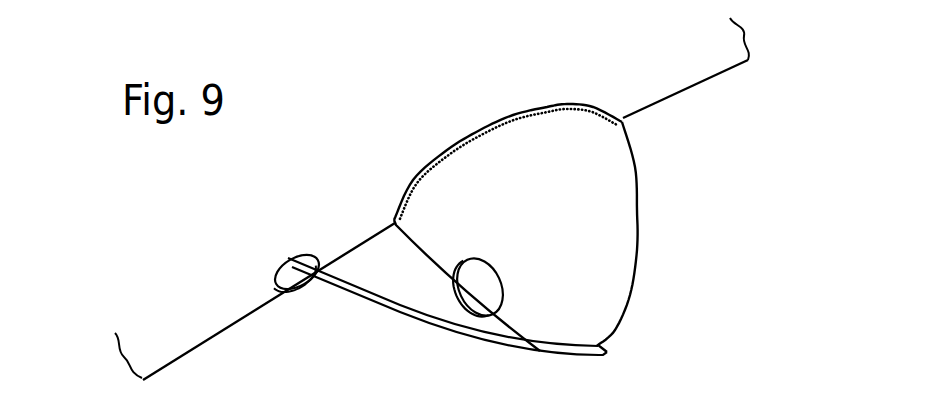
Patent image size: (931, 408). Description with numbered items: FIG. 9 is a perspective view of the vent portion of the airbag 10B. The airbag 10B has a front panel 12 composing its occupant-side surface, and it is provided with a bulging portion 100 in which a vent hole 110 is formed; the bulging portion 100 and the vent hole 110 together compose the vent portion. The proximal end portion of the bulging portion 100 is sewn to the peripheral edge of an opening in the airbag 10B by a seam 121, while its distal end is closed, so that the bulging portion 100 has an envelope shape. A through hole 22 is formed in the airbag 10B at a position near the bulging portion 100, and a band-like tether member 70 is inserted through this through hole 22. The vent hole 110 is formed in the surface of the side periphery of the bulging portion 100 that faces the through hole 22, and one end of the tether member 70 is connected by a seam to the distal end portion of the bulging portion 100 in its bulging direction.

The airbag 10B is at (692, 105).
The front panel 12 is at (712, 63).
The through hole 22 is at (284, 281).
The tether member 70 is at (397, 313).
The bulging portion 100 is at (549, 214).
The vent hole 110 is at (488, 281).
The seam 121 is at (477, 135).